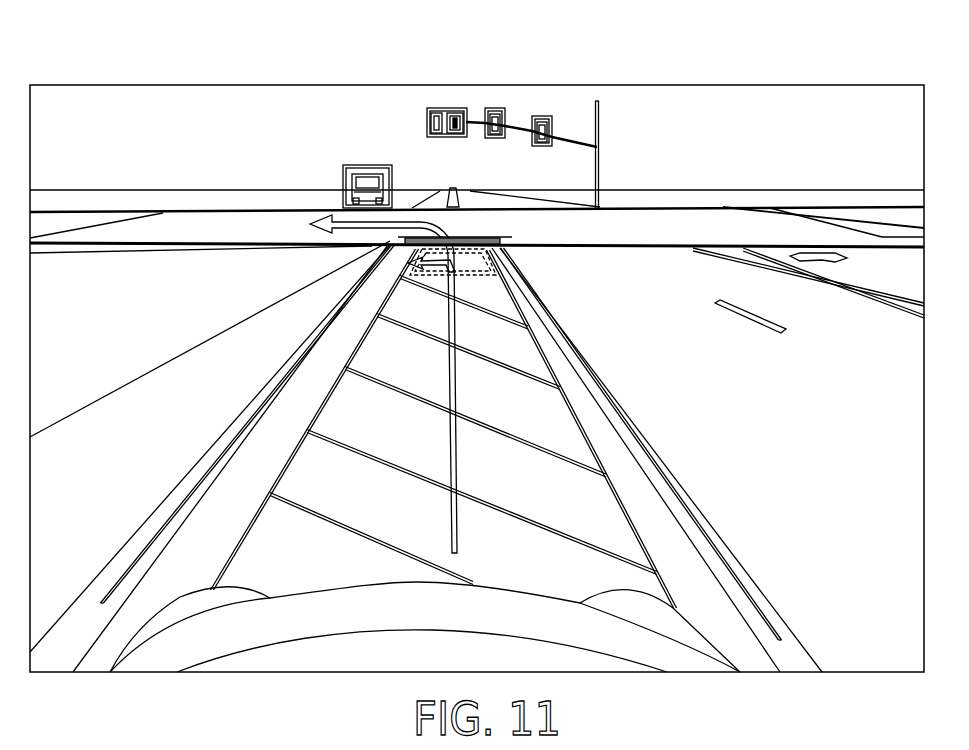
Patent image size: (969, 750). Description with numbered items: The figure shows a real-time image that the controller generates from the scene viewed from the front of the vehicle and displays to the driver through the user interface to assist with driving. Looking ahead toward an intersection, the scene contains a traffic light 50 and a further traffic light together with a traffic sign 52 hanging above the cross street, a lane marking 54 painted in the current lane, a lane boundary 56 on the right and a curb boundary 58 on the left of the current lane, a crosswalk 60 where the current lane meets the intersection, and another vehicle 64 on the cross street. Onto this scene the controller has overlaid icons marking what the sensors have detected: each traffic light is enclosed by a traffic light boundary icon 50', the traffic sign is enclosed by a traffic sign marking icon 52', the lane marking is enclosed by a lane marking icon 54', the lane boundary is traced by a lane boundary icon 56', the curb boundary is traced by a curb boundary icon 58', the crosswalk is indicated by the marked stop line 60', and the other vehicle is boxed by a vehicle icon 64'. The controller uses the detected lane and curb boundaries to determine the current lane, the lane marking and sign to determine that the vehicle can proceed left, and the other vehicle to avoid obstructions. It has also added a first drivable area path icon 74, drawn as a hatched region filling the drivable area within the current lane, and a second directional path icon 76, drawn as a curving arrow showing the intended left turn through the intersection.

The traffic light 50 is at (457, 148).
The traffic light boundary icon 50' is at (453, 95).
The traffic sign 52 is at (431, 140).
The traffic sign marking icon 52' is at (448, 91).
The lane marking 54 is at (627, 289).
The lane marking icon 54' is at (494, 265).
The lane boundary 56 is at (708, 460).
The lane boundary icon 56' is at (650, 444).
The curb boundary 58 is at (210, 458).
The curb boundary icon 58' is at (238, 424).
The crosswalk 60 is at (455, 198).
The detected stop line 60' is at (485, 226).
The other vehicle 64 is at (343, 169).
The vehicle icon 64' is at (328, 185).
The first drivable area path icon 74 is at (618, 500).
The second directional path icon 76 is at (343, 229).